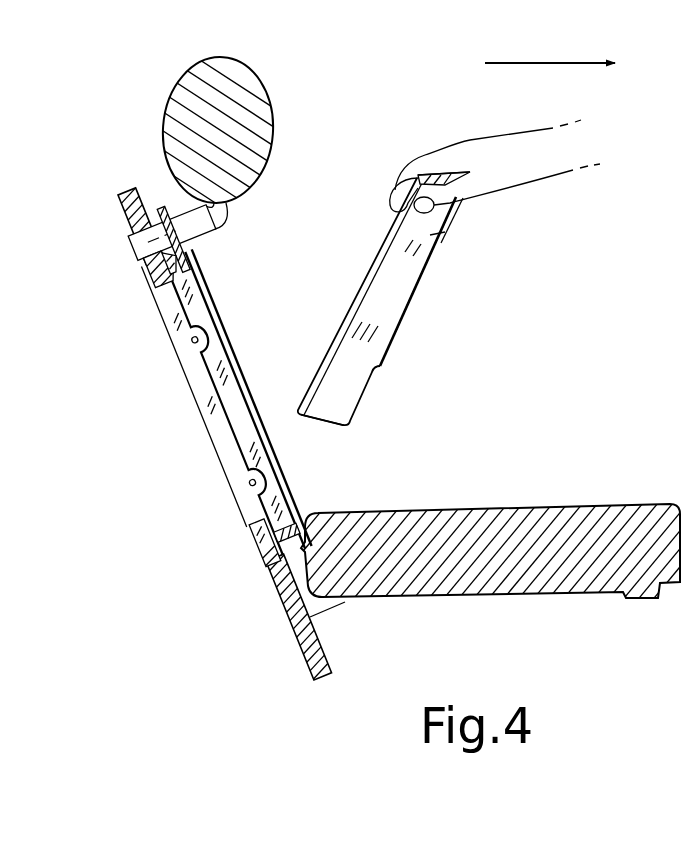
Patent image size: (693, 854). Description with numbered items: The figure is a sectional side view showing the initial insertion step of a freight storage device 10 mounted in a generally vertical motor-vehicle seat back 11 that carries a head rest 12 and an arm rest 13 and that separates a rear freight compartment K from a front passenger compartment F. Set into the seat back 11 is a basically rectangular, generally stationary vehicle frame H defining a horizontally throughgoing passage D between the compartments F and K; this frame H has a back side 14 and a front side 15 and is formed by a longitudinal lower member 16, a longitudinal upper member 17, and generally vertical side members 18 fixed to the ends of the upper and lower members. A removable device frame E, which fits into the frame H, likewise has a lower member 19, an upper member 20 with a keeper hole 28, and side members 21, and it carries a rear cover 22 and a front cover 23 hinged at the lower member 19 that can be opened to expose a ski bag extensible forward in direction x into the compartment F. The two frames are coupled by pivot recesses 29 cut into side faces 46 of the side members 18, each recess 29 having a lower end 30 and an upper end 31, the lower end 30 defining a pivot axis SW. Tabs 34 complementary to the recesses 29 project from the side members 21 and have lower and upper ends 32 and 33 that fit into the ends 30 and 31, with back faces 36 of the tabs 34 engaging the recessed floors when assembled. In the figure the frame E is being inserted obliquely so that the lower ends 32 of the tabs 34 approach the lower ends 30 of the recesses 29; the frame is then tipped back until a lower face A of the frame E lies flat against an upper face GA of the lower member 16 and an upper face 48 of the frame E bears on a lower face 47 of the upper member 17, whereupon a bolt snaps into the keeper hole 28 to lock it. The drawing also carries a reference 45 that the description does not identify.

The freight storage device 10 is at (338, 102).
The motor-vehicle seat back 11 is at (150, 190).
The head rest 12 is at (266, 90).
The arm rest 13 is at (608, 598).
The back side 14 is at (238, 514).
The front side 15 is at (211, 292).
The lower member 16 is at (262, 525).
The upper member 17 is at (164, 314).
The side members 18 is at (170, 338).
The lower member 19 is at (345, 437).
The upper member 20 is at (434, 170).
The side members 21 is at (469, 217).
The rear cover 22 is at (368, 262).
The front cover 23 is at (455, 248).
The keeper hole 28 is at (176, 264).
The pivot recesses 29 is at (252, 372).
The lower end 30 is at (272, 452).
The upper end 31 is at (224, 333).
The lower end 32 is at (382, 383).
The upper end 33 is at (446, 252).
The tabs 34 is at (426, 302).
The back faces 36 is at (422, 264).
The slide 45 is at (203, 392).
The side faces 46 is at (424, 228).
The lower face 47 is at (172, 296).
The upper face 48 is at (418, 170).
The lower face A is at (322, 432).
The passage D is at (208, 432).
The device frame E is at (390, 170).
The vehicle frame H is at (174, 382).
The upper face GA is at (282, 520).
The pivot axis SW is at (281, 459).
The rear freight compartment K is at (80, 583).
The front passenger compartment F is at (525, 458).
The direction x is at (536, 63).